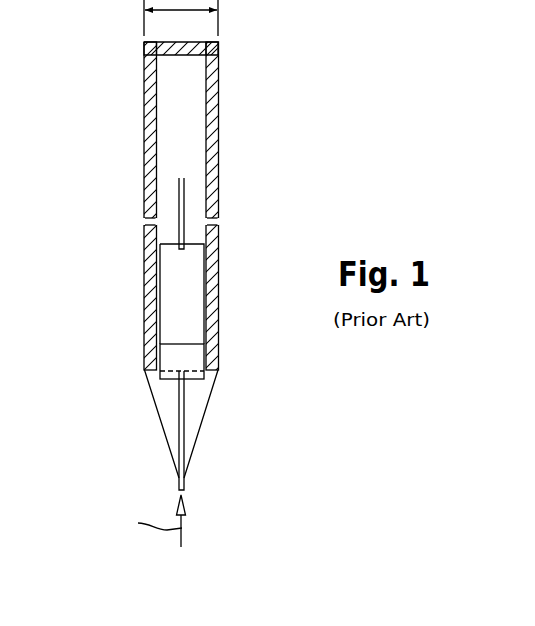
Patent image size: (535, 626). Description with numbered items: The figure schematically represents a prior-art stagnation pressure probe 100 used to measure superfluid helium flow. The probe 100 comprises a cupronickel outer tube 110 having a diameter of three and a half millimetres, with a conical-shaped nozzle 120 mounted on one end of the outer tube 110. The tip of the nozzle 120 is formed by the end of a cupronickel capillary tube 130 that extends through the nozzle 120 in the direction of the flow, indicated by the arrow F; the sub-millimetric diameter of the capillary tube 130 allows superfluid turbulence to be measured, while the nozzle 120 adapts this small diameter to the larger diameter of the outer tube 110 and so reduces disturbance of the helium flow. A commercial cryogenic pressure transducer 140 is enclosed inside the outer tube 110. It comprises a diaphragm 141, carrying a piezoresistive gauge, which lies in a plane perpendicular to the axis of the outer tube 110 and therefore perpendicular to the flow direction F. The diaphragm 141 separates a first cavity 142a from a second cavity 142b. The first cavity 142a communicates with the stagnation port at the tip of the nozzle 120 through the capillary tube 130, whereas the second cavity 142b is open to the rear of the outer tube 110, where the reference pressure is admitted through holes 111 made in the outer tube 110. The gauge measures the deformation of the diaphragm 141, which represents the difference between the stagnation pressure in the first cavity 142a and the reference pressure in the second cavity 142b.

The stagnation pressure probe 100 is at (85, 88).
The outer tube 110 is at (215, 132).
The holes 111 is at (127, 219).
The conical-shaped nozzle 120 is at (162, 425).
The capillary tube 130 is at (183, 480).
The cryogenic pressure transducer 140 is at (192, 244).
The diaphragm 141 is at (178, 344).
The first cavity 142a is at (164, 370).
The second cavity 142b is at (154, 295).